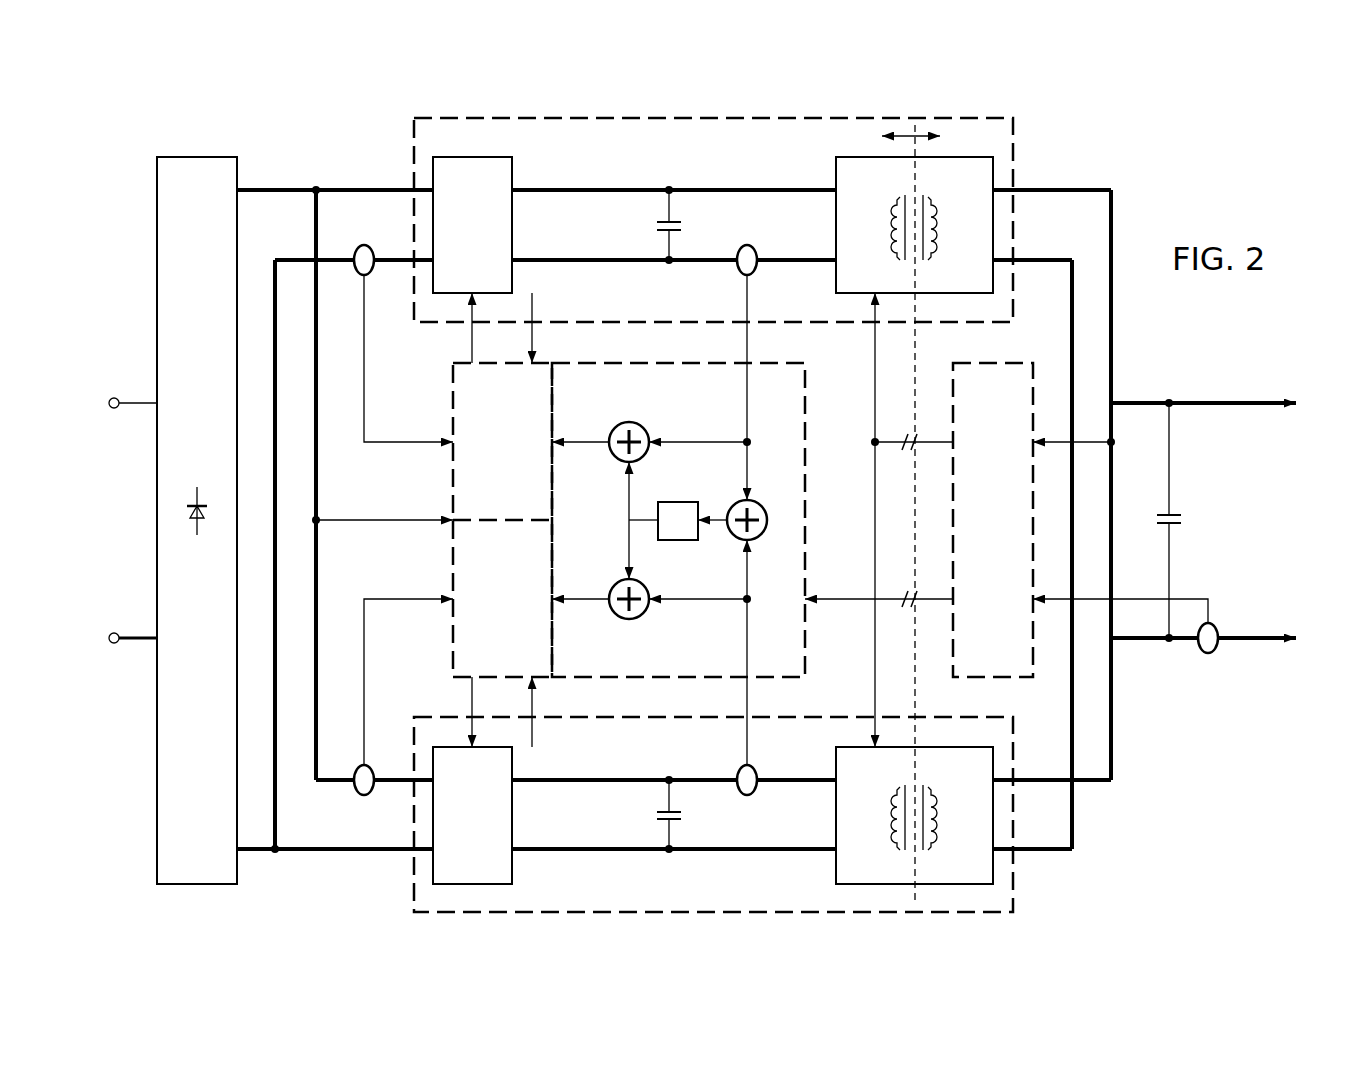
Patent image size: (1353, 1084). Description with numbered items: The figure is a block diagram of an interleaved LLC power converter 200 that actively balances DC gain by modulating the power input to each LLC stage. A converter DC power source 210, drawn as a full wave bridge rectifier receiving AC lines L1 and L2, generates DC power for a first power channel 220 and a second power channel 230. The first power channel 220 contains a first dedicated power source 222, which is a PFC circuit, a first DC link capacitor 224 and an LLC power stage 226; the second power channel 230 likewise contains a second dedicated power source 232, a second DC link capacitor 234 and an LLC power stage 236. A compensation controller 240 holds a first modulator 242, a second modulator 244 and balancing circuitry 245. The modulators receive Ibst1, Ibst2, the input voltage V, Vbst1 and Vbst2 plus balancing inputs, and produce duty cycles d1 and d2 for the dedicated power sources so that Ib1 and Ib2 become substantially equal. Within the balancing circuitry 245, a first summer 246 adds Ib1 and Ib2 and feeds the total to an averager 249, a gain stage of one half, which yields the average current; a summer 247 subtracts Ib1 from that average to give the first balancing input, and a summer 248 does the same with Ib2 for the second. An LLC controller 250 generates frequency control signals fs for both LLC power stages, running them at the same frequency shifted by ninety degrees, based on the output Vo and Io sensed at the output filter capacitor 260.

The interleaved LLC power converter 200 is at (1221, 329).
The converter DC power source 210 is at (216, 331).
The first power channel 220 is at (1016, 172).
The first dedicated power source 222 is at (453, 254).
The first DC link capacitor 224 is at (657, 226).
The LLC power stage 226 is at (833, 174).
The second power channel 230 is at (1016, 863).
The second dedicated power source 232 is at (453, 844).
The second DC link capacitor 234 is at (657, 815).
The LLC power stage 236 is at (833, 866).
The compensation controller 240 is at (453, 488).
The first modulator 242 is at (481, 481).
The second modulator 244 is at (481, 639).
The balancing circuitry 245 is at (698, 406).
The first summer 246 is at (742, 498).
The summer 247 is at (617, 424).
The summer 248 is at (616, 621).
The averager 249 is at (680, 542).
The LLC controller 250 is at (974, 557).
The output filter capacitor 260 is at (1181, 521).